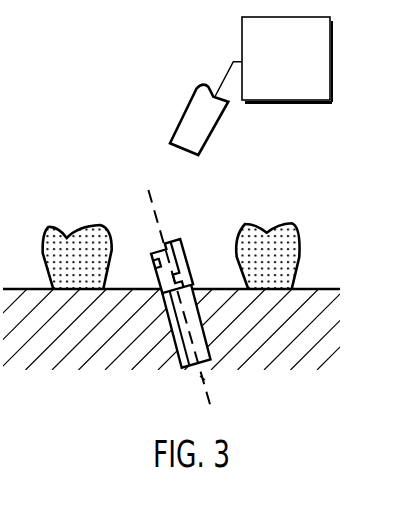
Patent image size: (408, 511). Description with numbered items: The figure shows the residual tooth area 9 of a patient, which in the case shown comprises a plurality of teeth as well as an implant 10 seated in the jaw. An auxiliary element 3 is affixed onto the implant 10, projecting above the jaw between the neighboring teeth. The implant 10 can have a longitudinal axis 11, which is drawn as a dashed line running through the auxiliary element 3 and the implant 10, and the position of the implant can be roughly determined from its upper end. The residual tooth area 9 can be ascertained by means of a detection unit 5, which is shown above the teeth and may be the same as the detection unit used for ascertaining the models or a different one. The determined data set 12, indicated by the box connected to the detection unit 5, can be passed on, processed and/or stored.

The auxiliary element 3 is at (184, 250).
The detection unit 5 is at (186, 119).
The residual tooth area 9 is at (365, 234).
The implant 10 is at (204, 338).
The longitudinal axis 11 is at (205, 378).
The data set 12 is at (300, 103).